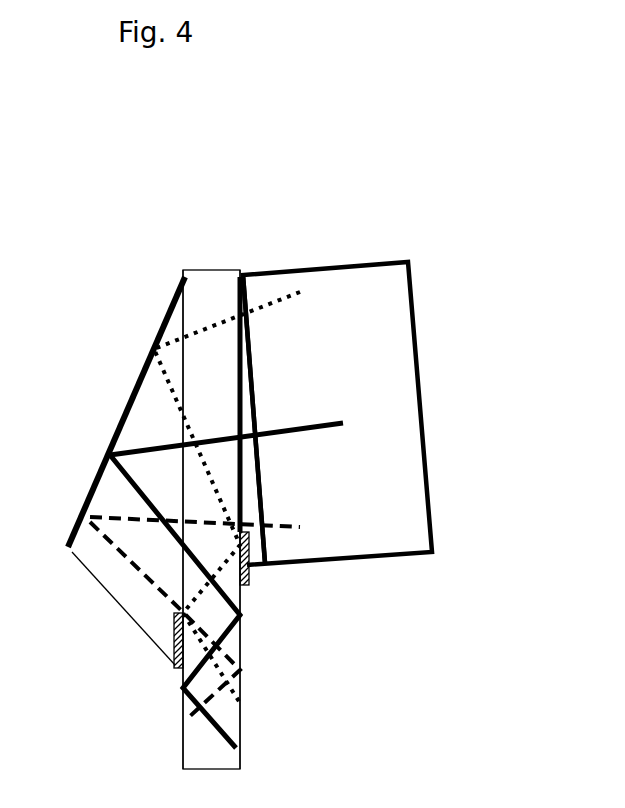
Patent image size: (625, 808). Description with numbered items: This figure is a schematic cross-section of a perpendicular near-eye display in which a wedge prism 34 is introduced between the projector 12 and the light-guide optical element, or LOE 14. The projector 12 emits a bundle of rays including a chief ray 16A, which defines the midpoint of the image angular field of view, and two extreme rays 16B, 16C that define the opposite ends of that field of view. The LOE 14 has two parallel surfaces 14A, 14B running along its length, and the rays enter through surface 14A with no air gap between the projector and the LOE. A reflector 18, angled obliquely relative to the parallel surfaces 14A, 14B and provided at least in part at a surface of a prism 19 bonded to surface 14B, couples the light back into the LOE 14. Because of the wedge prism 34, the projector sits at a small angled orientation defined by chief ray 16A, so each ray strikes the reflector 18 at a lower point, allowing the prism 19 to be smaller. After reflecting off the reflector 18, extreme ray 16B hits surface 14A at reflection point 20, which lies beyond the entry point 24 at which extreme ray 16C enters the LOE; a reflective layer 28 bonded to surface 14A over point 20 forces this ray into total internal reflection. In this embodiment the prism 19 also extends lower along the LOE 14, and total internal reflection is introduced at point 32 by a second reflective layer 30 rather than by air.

The projector 12 is at (368, 560).
The LOE 14 is at (217, 288).
The surface 14A is at (240, 723).
The surface 14B is at (183, 748).
The chief ray 16A is at (250, 433).
The extreme ray 16B is at (250, 492).
The extreme ray 16C is at (225, 530).
The reflector 18 is at (157, 310).
The prism 19 is at (82, 560).
The reflection point 20 is at (183, 507).
The entry point 24 is at (270, 520).
The reflective layer 28 is at (240, 587).
The second reflective layer 30 is at (178, 670).
The point 32 is at (172, 611).
The wedge prism 34 is at (257, 570).